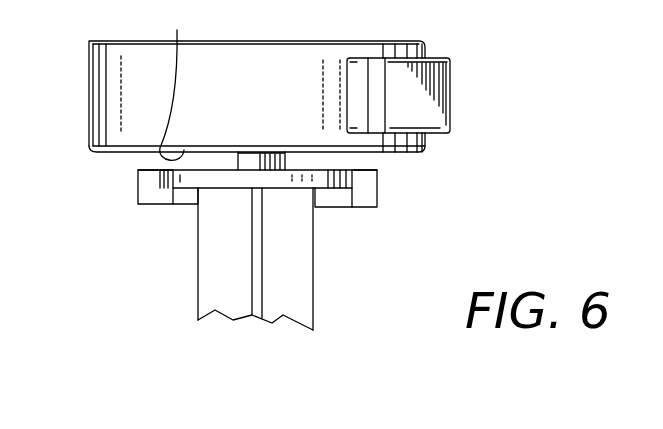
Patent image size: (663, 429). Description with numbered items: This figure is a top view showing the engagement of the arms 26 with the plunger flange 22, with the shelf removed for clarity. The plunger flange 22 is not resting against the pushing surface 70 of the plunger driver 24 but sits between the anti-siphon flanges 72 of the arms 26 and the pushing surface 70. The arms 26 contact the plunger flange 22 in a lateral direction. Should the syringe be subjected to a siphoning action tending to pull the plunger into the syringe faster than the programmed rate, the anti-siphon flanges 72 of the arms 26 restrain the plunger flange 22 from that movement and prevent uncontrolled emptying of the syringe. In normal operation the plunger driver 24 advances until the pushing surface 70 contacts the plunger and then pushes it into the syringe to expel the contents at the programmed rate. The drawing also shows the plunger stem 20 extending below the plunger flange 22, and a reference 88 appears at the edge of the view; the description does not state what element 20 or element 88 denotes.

The post 20 is at (215, 293).
The plunger flange 22 is at (272, 181).
The plunger driver 24 is at (290, 65).
The arms 26 is at (138, 192).
The pushing surface 70 is at (178, 80).
The anti-siphon flanges 72 is at (162, 194).
The member 88 is at (633, 0).